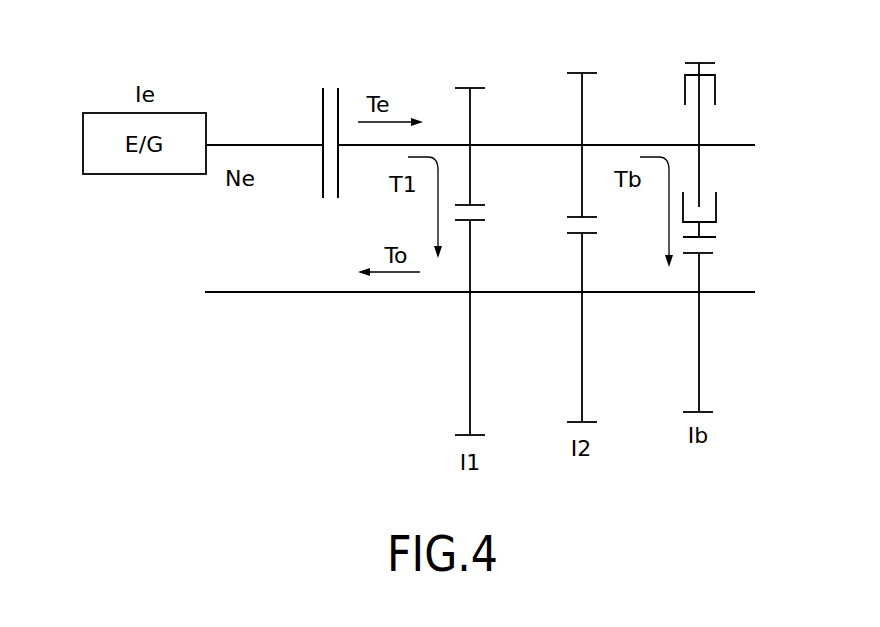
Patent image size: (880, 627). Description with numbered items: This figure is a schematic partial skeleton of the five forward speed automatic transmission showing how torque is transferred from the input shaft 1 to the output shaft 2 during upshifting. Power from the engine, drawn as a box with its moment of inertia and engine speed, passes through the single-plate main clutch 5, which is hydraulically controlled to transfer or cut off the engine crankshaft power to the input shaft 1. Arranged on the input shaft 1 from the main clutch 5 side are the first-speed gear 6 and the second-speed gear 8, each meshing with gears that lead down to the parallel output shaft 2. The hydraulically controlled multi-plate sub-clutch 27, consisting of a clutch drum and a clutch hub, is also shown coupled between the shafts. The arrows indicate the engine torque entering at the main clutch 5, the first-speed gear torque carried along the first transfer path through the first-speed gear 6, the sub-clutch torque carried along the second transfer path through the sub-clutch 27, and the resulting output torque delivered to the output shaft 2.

The input shaft 1 is at (733, 147).
The output shaft 2 is at (733, 294).
The main clutch 5 is at (332, 85).
The first-speed gear 6 is at (470, 118).
The second-speed gear 8 is at (582, 110).
The sub-clutch 27 is at (717, 100).